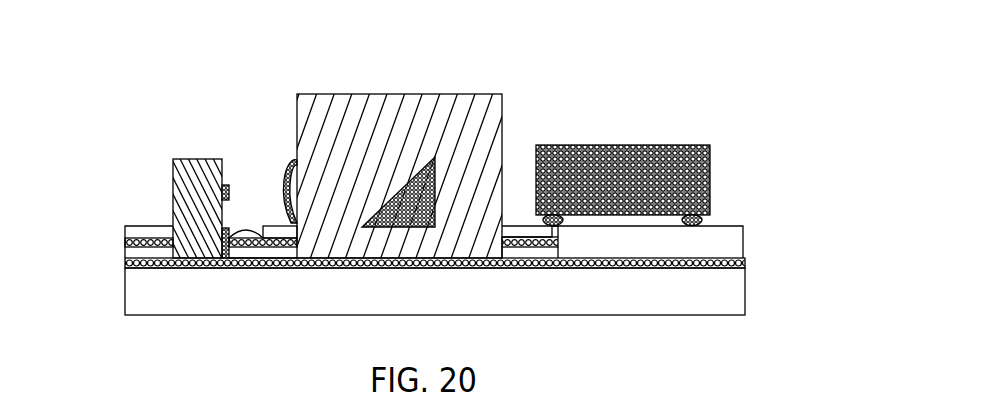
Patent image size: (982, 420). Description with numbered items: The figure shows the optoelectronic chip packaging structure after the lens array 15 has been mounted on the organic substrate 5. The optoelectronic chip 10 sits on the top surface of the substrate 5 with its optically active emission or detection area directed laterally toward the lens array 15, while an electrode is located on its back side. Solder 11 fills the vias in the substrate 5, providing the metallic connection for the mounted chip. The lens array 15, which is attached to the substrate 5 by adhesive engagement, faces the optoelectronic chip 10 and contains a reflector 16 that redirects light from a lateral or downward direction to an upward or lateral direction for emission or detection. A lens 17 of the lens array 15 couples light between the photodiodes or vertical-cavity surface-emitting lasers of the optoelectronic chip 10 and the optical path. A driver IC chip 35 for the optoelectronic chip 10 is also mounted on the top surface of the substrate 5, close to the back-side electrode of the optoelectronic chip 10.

The substrate 5 is at (722, 292).
The optoelectronic (OE) chip 10 is at (190, 180).
The solder 11 is at (243, 230).
The lens array 15 is at (317, 118).
The reflector 16 is at (398, 192).
The lens 17 is at (285, 158).
The driver IC chip 35 is at (652, 145).